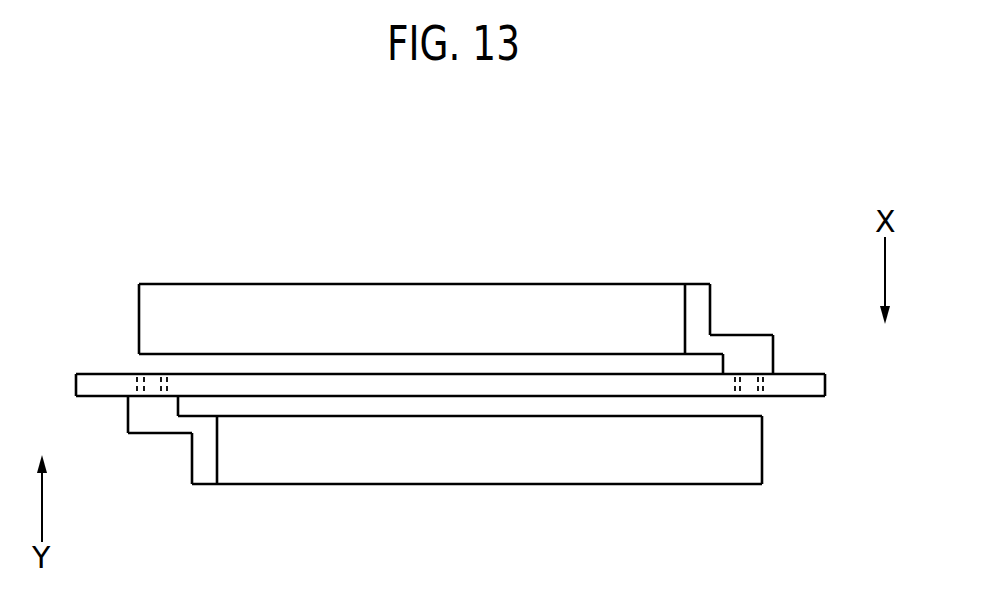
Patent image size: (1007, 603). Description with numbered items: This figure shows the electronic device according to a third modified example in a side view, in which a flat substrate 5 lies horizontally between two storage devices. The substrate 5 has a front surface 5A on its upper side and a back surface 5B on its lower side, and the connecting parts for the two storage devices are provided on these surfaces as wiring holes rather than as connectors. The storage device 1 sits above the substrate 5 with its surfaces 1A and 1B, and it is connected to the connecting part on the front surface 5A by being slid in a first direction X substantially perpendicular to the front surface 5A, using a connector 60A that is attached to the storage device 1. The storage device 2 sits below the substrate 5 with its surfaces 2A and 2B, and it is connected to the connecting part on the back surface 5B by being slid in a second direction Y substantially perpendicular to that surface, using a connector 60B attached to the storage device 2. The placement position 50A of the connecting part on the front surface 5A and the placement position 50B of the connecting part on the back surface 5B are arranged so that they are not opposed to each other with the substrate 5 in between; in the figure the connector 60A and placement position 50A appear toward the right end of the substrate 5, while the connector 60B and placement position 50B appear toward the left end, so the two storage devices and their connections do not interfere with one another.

The storage device 1 is at (494, 298).
The surface of storage device 1 1A is at (388, 284).
The surface of storage device 1 1B is at (462, 354).
The storage device 2 is at (558, 472).
The surface of storage device 2 2A is at (688, 415).
The surface of storage device 2 2B is at (337, 484).
The substrate 5 is at (825, 378).
The front surface 5A is at (303, 372).
The back surface 5B is at (248, 395).
The placement position 50A is at (752, 373).
The placement position 50B is at (128, 436).
The connector 60A is at (695, 298).
The connector 60B is at (205, 470).